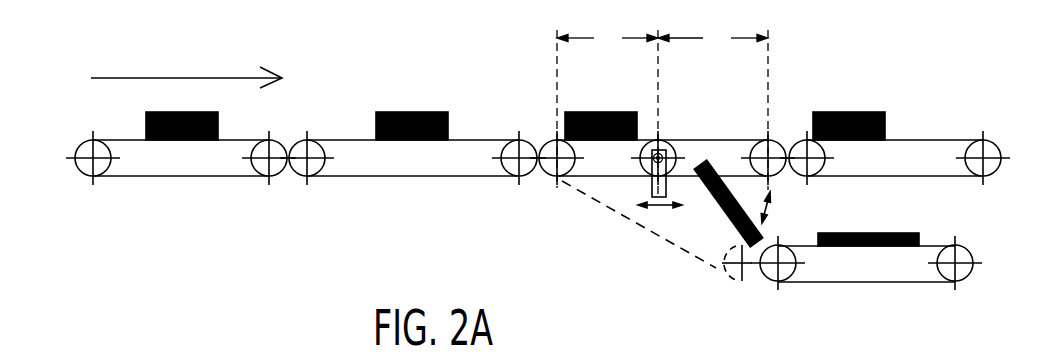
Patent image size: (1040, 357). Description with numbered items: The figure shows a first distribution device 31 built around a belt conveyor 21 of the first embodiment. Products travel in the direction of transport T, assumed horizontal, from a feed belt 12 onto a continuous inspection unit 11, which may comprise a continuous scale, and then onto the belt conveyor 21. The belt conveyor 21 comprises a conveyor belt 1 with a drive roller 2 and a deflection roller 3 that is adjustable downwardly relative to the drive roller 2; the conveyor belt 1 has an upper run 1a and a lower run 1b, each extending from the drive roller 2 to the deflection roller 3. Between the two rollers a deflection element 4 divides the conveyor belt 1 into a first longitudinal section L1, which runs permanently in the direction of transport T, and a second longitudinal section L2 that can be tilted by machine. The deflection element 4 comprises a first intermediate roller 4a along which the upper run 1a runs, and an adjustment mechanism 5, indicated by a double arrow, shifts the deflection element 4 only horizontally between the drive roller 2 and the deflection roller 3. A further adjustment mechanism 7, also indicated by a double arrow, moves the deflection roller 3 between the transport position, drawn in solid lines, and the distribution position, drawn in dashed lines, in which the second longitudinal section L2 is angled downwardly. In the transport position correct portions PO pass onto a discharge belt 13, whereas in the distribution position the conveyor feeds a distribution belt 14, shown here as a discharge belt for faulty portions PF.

The conveyor belt 1 is at (658, 161).
The upper run 1a is at (730, 140).
The lower run 1b is at (617, 177).
The drive roller 2 is at (552, 150).
The deflection roller 3 is at (781, 148).
The deflection element 4 is at (638, 195).
The first intermediate roller 4a is at (662, 152).
The adjustment mechanism 5 is at (660, 212).
The adjustment mechanism 7 is at (771, 208).
The continuous inspection unit 11 is at (409, 192).
The feed belt 12 is at (177, 192).
The discharge belt 13 is at (934, 116).
The distribution belt 14 is at (862, 297).
The belt conveyor 21 is at (649, 257).
The first distribution device 31 is at (993, 64).
The direction of transport T is at (186, 64).
The first longitudinal section L1 is at (607, 110).
The second longitudinal section L2 is at (713, 107).
The correct portions PO is at (549, 150).
The faulty portions PF is at (845, 232).